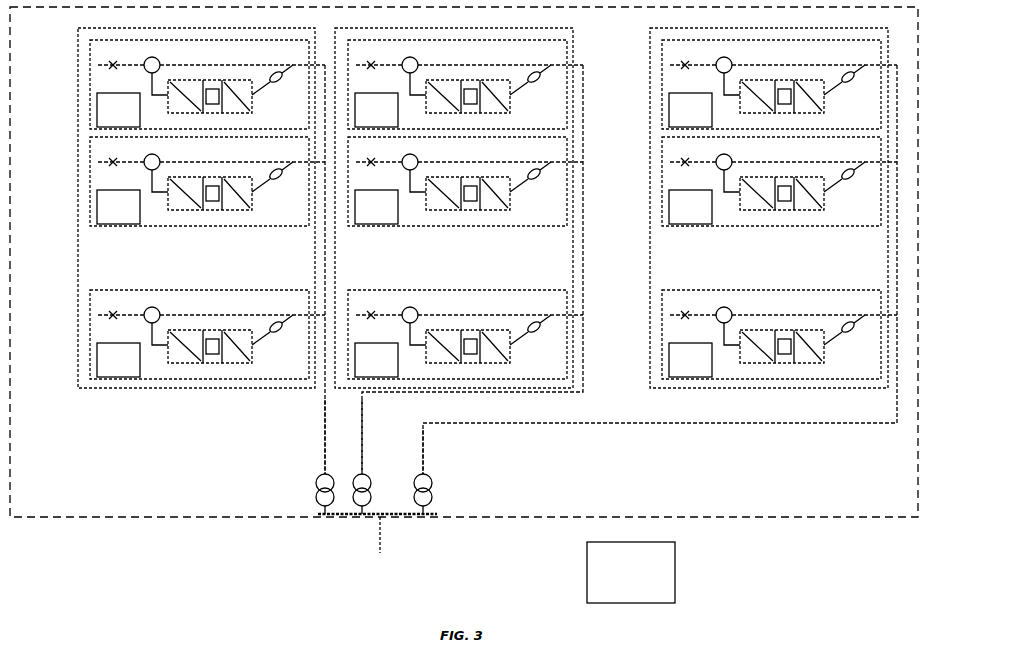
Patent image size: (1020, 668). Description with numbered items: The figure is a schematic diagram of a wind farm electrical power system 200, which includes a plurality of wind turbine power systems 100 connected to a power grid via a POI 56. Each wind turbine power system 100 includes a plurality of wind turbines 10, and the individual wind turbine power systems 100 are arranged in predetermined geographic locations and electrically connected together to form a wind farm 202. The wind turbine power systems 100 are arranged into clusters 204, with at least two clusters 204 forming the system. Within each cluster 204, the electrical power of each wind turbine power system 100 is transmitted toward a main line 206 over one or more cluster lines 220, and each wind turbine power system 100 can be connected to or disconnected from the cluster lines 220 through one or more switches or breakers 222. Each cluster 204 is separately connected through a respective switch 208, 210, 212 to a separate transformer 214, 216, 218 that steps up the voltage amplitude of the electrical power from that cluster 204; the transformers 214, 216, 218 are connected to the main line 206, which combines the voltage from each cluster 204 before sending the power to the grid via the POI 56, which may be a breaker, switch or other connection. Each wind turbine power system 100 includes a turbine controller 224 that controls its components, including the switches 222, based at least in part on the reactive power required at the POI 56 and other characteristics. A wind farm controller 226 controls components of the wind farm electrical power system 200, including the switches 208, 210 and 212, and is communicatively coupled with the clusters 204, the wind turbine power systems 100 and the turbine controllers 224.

The wind turbine 10 is at (670, 145).
The POI 56 is at (383, 534).
The wind turbine power system 100 is at (88, 97).
The wind farm electrical power system 200 is at (202, 568).
The wind farm 202 is at (778, 520).
The cluster 204 is at (78, 148).
The main line 206 is at (318, 522).
The switch 208 is at (323, 443).
The switch 210 is at (361, 447).
The switch 212 is at (421, 449).
The transformer 214 is at (316, 485).
The transformer 216 is at (371, 478).
The transformer 218 is at (433, 478).
The cluster line 220 is at (323, 63).
The switch or breaker 222 is at (297, 62).
The turbine controller 224 is at (404, 235).
The wind farm controller 226 is at (631, 572).